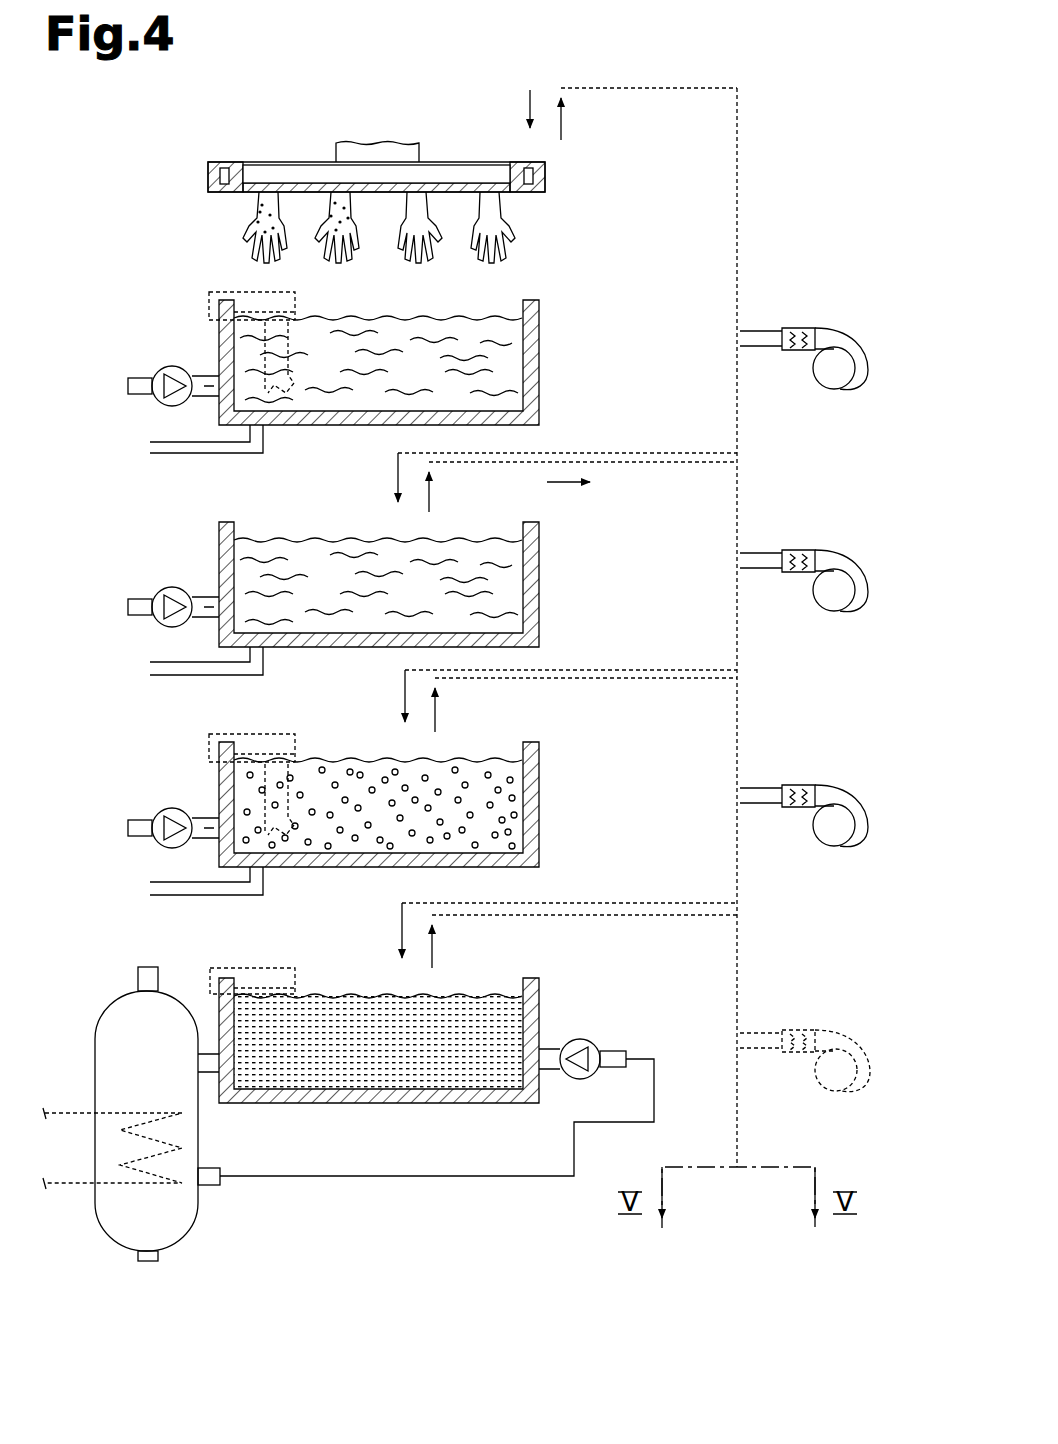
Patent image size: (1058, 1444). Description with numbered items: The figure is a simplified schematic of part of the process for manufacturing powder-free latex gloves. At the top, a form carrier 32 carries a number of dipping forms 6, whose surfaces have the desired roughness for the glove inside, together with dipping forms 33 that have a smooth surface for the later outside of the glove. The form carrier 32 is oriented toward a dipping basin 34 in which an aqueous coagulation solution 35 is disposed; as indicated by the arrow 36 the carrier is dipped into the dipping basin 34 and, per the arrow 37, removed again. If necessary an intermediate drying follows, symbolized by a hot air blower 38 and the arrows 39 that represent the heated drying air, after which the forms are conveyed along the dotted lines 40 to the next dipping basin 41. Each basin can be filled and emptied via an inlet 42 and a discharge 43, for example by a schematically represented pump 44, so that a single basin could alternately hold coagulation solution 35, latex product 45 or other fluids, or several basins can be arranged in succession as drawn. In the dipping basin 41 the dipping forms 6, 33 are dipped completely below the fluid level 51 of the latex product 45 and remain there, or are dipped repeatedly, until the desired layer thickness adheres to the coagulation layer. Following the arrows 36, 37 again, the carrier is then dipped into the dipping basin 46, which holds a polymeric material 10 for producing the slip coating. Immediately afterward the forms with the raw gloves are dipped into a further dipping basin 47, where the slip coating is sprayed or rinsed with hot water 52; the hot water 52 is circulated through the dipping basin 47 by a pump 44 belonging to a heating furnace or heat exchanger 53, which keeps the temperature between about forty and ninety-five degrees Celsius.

The dipping forms 6 is at (264, 195).
The polymeric material 10 is at (483, 812).
The form carrier 32 is at (380, 125).
The dipping forms 33 is at (416, 205).
The dipping basin 34 is at (565, 315).
The coagulation solution 35 is at (505, 390).
The arrow 36 is at (528, 107).
The arrow 37 is at (563, 125).
The hot air blower 38 is at (832, 368).
The arrows 39 is at (750, 331).
The dotted lines 40 is at (740, 215).
The dipping basin 41 is at (565, 537).
The inlet 42 is at (202, 384).
The discharge 43 is at (160, 450).
The pump 44 is at (160, 381).
The latex product 45 is at (500, 617).
The dipping basin 46 is at (565, 760).
The dipping basin 47 is at (565, 996).
The fluid level 51 is at (487, 302).
The hot water 52 is at (503, 1036).
The heat exchanger 53 is at (130, 1062).